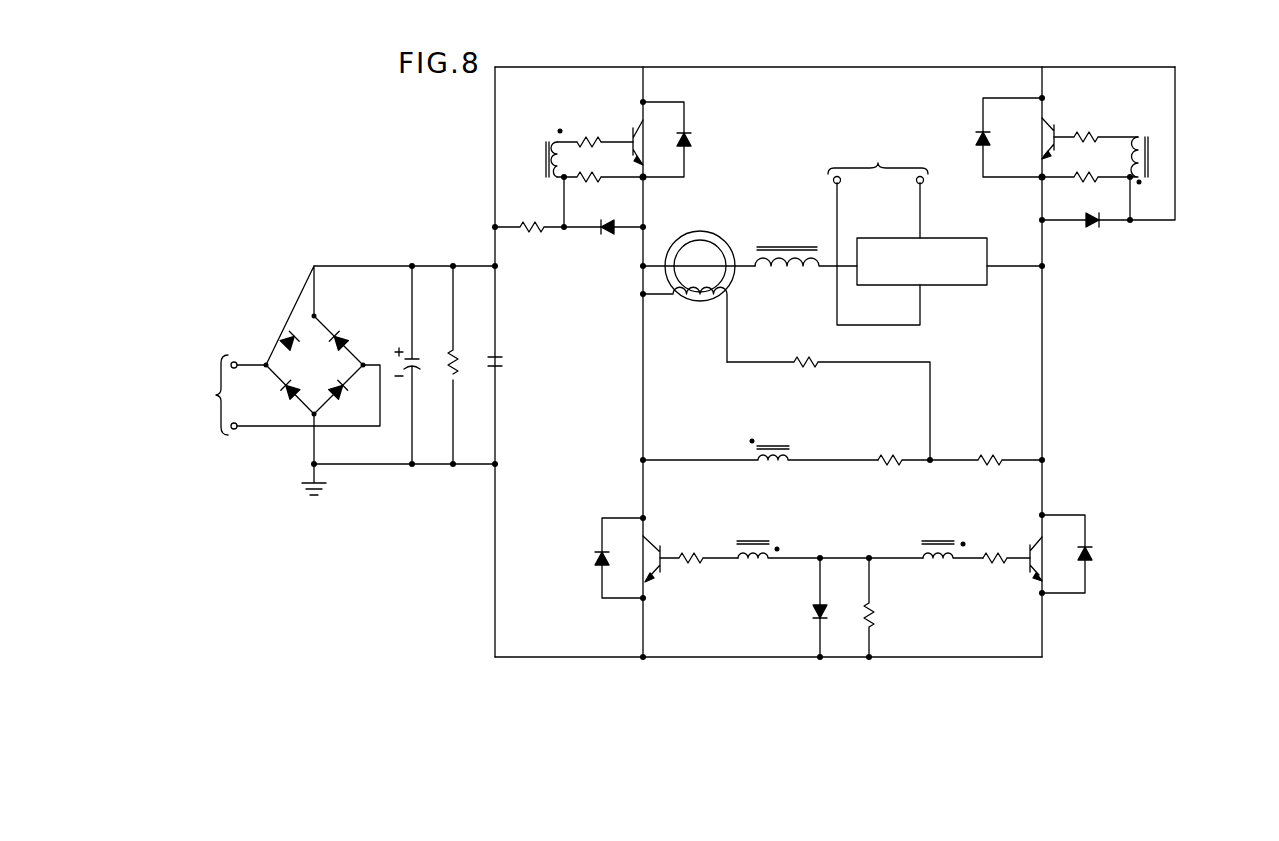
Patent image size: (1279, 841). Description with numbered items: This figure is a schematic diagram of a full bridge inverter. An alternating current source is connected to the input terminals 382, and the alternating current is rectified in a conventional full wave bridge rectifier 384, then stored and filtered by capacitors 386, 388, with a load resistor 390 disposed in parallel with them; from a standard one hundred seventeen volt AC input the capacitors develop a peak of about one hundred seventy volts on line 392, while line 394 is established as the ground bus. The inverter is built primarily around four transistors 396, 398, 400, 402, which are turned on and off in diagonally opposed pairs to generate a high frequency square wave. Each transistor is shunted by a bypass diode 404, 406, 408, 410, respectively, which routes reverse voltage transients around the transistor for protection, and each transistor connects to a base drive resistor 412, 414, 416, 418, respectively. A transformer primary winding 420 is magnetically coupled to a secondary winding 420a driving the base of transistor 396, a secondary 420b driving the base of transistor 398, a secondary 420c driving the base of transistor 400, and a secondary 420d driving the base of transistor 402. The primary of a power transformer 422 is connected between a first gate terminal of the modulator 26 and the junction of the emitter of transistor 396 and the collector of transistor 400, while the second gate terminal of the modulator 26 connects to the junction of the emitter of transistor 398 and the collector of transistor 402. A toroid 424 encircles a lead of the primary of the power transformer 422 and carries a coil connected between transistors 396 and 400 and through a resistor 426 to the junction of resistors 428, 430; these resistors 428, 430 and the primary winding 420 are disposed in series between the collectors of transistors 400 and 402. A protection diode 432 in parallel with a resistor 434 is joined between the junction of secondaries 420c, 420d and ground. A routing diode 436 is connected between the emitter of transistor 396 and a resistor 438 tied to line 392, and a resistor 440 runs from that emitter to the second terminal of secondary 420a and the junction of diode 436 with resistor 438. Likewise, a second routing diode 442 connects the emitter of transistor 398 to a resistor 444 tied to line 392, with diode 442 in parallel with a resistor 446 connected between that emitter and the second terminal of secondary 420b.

The modulator 26 is at (975, 238).
The input terminals 382 is at (277, 395).
The full wave bridge rectifier 384 is at (333, 366).
The capacitor 386 is at (414, 356).
The capacitor 388 is at (504, 362).
The load resistor 390 is at (456, 352).
The line 392 is at (758, 67).
The line 394 is at (750, 659).
The transistor 396 is at (636, 120).
The transistor 398 is at (1057, 125).
The transistor 400 is at (662, 516).
The transistor 402 is at (1028, 545).
The bypass diode 404 is at (691, 136).
The bypass diode 406 is at (978, 132).
The bypass diode 408 is at (598, 553).
The bypass diode 410 is at (1092, 546).
The base drive resistor 412 is at (587, 138).
The base drive resistor 414 is at (1088, 134).
The base drive resistor 416 is at (690, 572).
The base drive resistor 418 is at (994, 566).
The transformer primary winding 420 is at (760, 444).
The secondary winding 420a is at (552, 142).
The secondary winding 420b is at (1162, 124).
The secondary winding 420c is at (772, 550).
The secondary winding 420d is at (922, 556).
The power transformer 422 is at (792, 246).
The toroid 424 is at (690, 298).
The resistor 426 is at (806, 358).
The resistor 428 is at (888, 456).
The resistor 430 is at (992, 456).
The protection diode 432 is at (812, 612).
The resistor 434 is at (877, 612).
The routing diode 436 is at (607, 236).
The resistor 438 is at (530, 224).
The resistor 440 is at (590, 183).
The routing diode 442 is at (1100, 228).
The resistor 444 is at (1175, 100).
The resistor 446 is at (1074, 177).